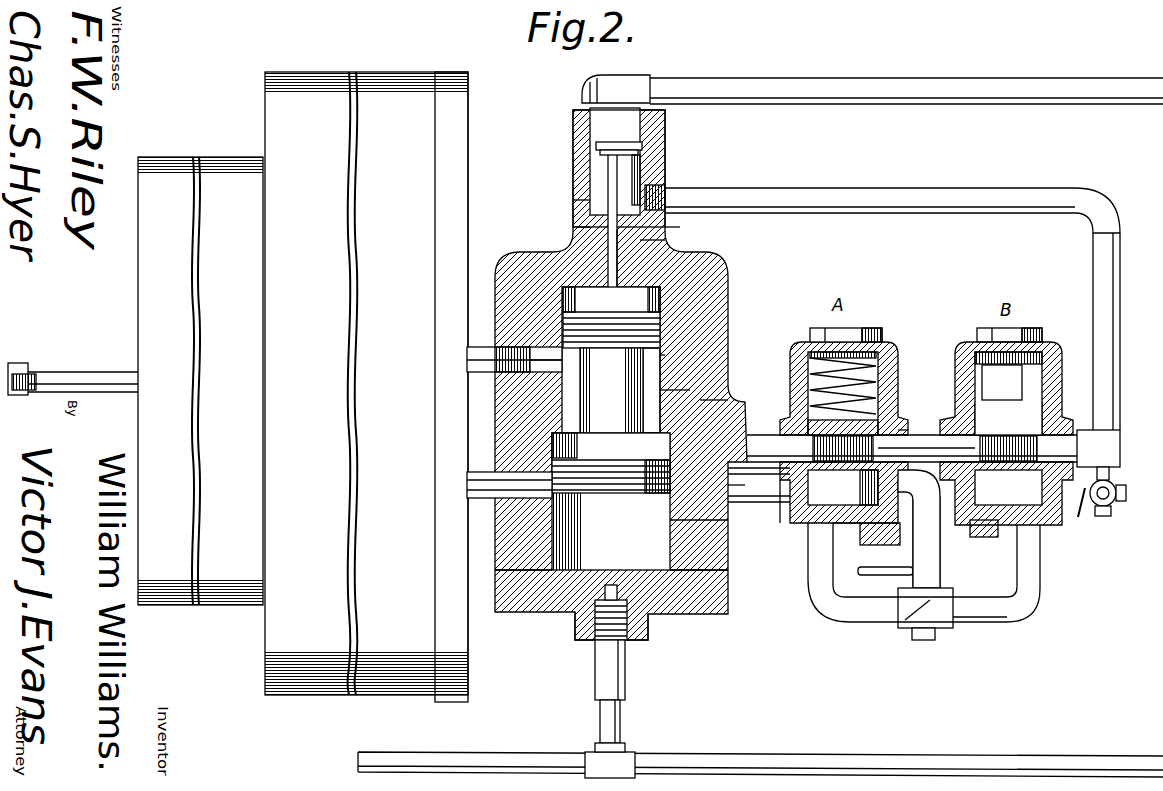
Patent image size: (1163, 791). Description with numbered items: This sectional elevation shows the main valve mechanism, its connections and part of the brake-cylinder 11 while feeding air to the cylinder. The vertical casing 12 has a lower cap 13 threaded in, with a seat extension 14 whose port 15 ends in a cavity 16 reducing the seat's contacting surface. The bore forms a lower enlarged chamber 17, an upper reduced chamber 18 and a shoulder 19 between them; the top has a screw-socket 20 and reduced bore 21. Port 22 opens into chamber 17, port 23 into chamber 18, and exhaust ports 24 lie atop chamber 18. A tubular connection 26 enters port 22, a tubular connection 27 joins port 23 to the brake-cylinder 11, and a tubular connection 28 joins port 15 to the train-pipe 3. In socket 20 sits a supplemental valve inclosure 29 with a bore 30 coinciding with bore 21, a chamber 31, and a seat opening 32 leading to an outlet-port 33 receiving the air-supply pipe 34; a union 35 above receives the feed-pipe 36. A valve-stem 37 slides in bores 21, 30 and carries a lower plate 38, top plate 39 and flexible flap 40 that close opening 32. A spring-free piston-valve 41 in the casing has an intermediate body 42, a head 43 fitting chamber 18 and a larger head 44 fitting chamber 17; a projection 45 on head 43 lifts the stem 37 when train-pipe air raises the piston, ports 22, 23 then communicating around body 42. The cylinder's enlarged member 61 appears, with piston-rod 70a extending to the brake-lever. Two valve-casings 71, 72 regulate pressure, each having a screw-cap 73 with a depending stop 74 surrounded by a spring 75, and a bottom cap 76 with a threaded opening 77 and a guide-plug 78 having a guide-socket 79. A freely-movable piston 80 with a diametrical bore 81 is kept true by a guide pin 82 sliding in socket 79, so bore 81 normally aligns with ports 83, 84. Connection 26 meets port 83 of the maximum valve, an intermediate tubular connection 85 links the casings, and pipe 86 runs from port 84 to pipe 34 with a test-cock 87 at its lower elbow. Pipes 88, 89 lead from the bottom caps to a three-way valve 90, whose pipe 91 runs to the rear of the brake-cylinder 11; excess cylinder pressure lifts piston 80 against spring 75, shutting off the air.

The train-pipe 3 is at (873, 756).
The brake-cylinder 11 is at (216, 157).
The casing 12 is at (730, 296).
The lower cap 13 is at (665, 614).
The seat extension 14 is at (560, 612).
The port 15 is at (614, 585).
The cavity 16 is at (605, 600).
The lower enlarged chamber 17 is at (700, 540).
The upper reduced chamber 18 is at (650, 392).
The circumferential shoulder 19 is at (680, 420).
The screw-socket 20 is at (668, 230).
The upper bore 21 is at (622, 268).
The port 22 is at (735, 503).
The port 23 is at (525, 375).
The exhaust ports 24 is at (645, 303).
The tubular connection 26 is at (760, 502).
The tubular connection 27 is at (468, 361).
The tubular connection 28 is at (625, 687).
The supplemental valve inclosure 29 is at (575, 186).
The bore 30 is at (573, 232).
The chamber 31 is at (645, 166).
The valve-seat and opening 32 is at (578, 212).
The outlet-port 33 is at (668, 190).
The air-supply pipe 34 is at (858, 213).
The union 35 is at (582, 92).
The feed-pipe 36 is at (912, 104).
The valve-stem 37 is at (668, 245).
The lower plate 38 is at (640, 152).
The top plate 39 is at (640, 145).
The flexible flap 40 is at (608, 153).
The piston-valve 41 is at (662, 357).
The intermediate body 42 is at (611, 390).
The head 43 is at (662, 337).
The head 44 is at (625, 493).
The central projection 45 is at (632, 292).
The enlarged member 61 is at (383, 72).
The piston-rod 70a is at (72, 372).
The valve-casing 71 is at (870, 380).
The valve-casing 72 is at (1062, 360).
The screw-cap 73 is at (875, 328).
The depending stop 74 is at (898, 345).
The spring 75 is at (878, 405).
The bottom cap 76 is at (858, 525).
The threaded opening 77 is at (792, 523).
The guide-plug 78 is at (885, 545).
The guide-socket 79 is at (930, 478).
The piston 80 is at (844, 492).
The bore 81 is at (900, 435).
The guide pin 82 is at (880, 425).
The port 83 is at (915, 430).
The port 84 is at (898, 478).
The intermediate tubular connection 85 is at (926, 458).
The pipe 86 is at (1121, 339).
The test-cock 87 is at (790, 420).
The pipe 88 is at (806, 580).
The pipe 89 is at (1042, 575).
The three-way valve 90 is at (912, 622).
The pipe 91 is at (468, 490).